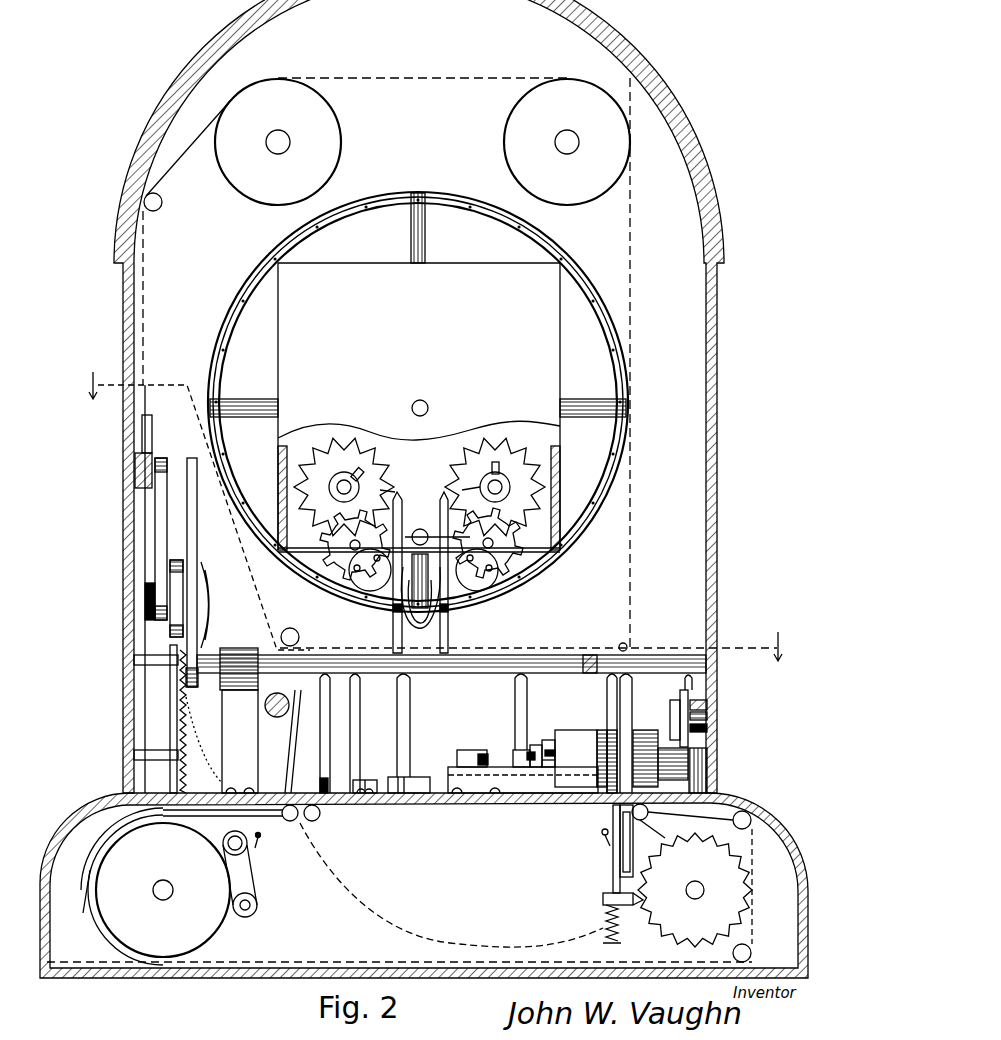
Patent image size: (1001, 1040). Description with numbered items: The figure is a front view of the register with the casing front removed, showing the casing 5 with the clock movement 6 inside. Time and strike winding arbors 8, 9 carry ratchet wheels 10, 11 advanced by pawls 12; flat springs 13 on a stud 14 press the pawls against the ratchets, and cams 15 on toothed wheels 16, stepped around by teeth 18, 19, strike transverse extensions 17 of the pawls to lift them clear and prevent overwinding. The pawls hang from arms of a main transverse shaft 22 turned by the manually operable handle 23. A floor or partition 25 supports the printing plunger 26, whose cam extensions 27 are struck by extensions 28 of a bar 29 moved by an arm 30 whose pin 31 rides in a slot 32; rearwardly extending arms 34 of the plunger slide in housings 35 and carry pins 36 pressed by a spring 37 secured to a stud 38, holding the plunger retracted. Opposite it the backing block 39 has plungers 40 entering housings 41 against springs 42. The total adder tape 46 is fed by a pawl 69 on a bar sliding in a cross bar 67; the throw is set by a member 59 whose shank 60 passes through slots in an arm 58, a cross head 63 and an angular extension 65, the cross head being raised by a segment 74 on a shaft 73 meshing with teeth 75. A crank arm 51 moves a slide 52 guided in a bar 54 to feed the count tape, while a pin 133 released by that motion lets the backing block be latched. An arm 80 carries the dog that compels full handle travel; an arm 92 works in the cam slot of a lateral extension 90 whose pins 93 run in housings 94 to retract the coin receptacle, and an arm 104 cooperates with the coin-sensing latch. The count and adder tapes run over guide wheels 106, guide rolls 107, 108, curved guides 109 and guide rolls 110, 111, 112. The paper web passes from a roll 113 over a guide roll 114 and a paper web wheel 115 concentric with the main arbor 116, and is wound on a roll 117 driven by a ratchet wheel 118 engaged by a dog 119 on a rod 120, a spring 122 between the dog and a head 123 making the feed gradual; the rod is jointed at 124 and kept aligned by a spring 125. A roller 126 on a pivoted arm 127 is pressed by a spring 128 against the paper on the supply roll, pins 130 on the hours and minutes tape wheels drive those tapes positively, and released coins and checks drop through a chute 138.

The casing 5 is at (719, 322).
The clock movement 6 is at (418, 372).
The time winding arbor 8 is at (394, 482).
The strike winding arbor 9 is at (480, 487).
The ratchet wheel 10 is at (344, 486).
The ratchet wheel 11 is at (501, 485).
The pawl 12 is at (420, 572).
The flat spring 13 is at (430, 524).
The stud 14 is at (443, 535).
The cam 15 is at (423, 570).
The toothed wheel 16 is at (421, 544).
The transverse extension 17 is at (420, 606).
The tooth 18 is at (358, 484).
The tooth 19 is at (500, 470).
The main transverse shaft 22 is at (548, 655).
The main manually operable handle 23 is at (591, 655).
The floor or partition 25 is at (540, 804).
The printing plunger 26 is at (575, 730).
The cam extension 27 is at (550, 740).
The extension 28 is at (556, 759).
The bar 29 is at (537, 745).
The arm 30 is at (520, 713).
The pin 31 is at (520, 750).
The slot 32 is at (555, 750).
The rearwardly extending arm 34 is at (523, 781).
The housing 35 is at (520, 775).
The upwardly projecting pin 36 is at (527, 757).
The spring 37 is at (470, 750).
The stud 38 is at (458, 755).
The backing block 39 is at (645, 730).
The plunger 40 is at (678, 758).
The housing 41 is at (700, 740).
The spring 42 is at (700, 765).
The total adder tape 46 is at (637, 270).
The crank arm 51 is at (700, 718).
The slide 52 is at (700, 708).
The bar 54 is at (690, 697).
The arm 58 is at (197, 546).
The pin 59 is at (207, 600).
The shank 60 is at (186, 592).
The cross head 63 is at (184, 624).
The angular extension 65 is at (166, 539).
The cross bar 67 is at (152, 460).
The pawl 69 is at (150, 427).
The shaft 73 is at (276, 717).
The segment 74 is at (261, 741).
The teeth 75 is at (178, 719).
The arm 80 is at (335, 733).
The lateral extension 90 is at (417, 777).
The downwardly extending arm 92 is at (410, 731).
The pin 93 is at (380, 780).
The housing 94 is at (365, 778).
The arm 104 is at (358, 710).
The guide wheel 106 is at (342, 141).
The guide roll 107 is at (163, 204).
The guide roll 108 is at (143, 815).
The curved guide 109 is at (83, 913).
The guide roll 110 is at (751, 953).
The guide roll 111 is at (751, 820).
The guide roll 112 is at (648, 812).
The roll 113 is at (163, 890).
The guide roll 114 is at (282, 813).
The paper web wheel 115 is at (442, 193).
The main arbor 116 is at (428, 406).
The roll 117 is at (751, 918).
The ratchet wheel 118 is at (695, 890).
The dog 119 is at (603, 897).
The rod 120 is at (613, 865).
The spring 122 is at (451, 885).
The head 123 is at (613, 933).
The joint 124 is at (605, 838).
The spring 125 is at (602, 832).
The roller 126 is at (257, 905).
The pivoted arm 127 is at (252, 875).
The spring 128 is at (261, 838).
The pin 130 is at (537, 577).
The pin 133 is at (683, 692).
The chute 138 is at (620, 870).